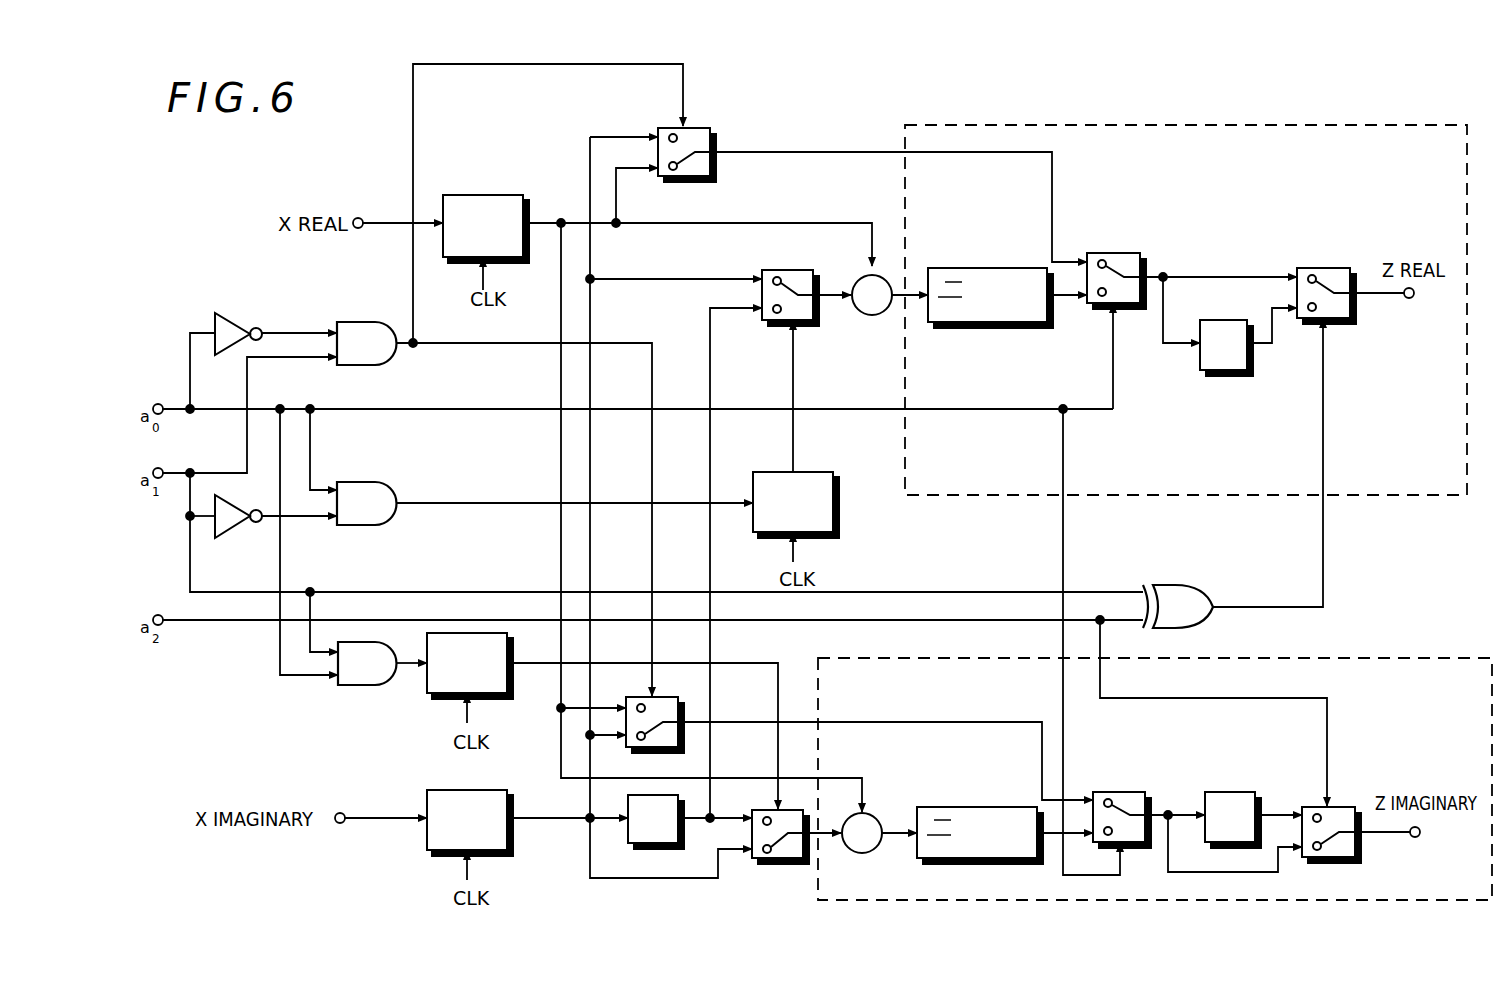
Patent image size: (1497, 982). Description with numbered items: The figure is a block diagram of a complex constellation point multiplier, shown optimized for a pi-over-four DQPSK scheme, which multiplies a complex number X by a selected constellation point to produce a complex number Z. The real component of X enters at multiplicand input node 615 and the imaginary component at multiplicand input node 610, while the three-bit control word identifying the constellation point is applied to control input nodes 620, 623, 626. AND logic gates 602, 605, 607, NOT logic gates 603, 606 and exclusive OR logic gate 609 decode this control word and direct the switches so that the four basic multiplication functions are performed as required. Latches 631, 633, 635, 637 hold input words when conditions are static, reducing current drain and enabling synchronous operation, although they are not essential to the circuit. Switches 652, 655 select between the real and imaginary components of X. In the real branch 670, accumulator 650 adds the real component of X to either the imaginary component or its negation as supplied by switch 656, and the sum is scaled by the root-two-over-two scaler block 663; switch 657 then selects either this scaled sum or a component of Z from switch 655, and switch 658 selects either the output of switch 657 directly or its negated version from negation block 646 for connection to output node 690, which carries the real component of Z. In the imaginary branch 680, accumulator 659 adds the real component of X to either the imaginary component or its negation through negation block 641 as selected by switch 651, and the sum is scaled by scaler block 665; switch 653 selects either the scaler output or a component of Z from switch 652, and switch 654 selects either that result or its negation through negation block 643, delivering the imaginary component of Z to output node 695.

The AND logic gate 602 is at (365, 322).
The NOT logic gate 603 is at (220, 313).
The AND logic gate 605 is at (378, 482).
The NOT logic gate 606 is at (240, 538).
The AND logic gate 607 is at (352, 685).
The exclusive OR logic gate 609 is at (1160, 585).
The multiplicand input node 610 is at (340, 823).
The multiplicand input node 615 is at (355, 218).
The control input node 620 is at (158, 404).
The control input node 623 is at (161, 468).
The control input node 626 is at (158, 615).
The latch 631 is at (452, 195).
The latch 633 is at (427, 688).
The latch 635 is at (427, 846).
The latch 637 is at (839, 520).
The negation block 641 is at (668, 849).
The negation block 643 is at (1215, 792).
The negation block 646 is at (1237, 376).
The accumulator 650 is at (878, 315).
The switch 651 is at (790, 866).
The switch 652 is at (665, 753).
The switch 653 is at (1110, 792).
The switch 654 is at (1340, 807).
The switch 655 is at (700, 128).
The switch 656 is at (775, 270).
The switch 657 is at (1115, 253).
The switch 658 is at (1312, 268).
The accumulator 659 is at (877, 814).
The √2/2 scaler block 663 is at (1010, 268).
The √2/2 scaler block 665 is at (1005, 807).
The real branch 670 is at (1150, 125).
The imaginary branch 680 is at (1355, 658).
The output node 690 is at (1412, 298).
The output node 695 is at (1419, 837).